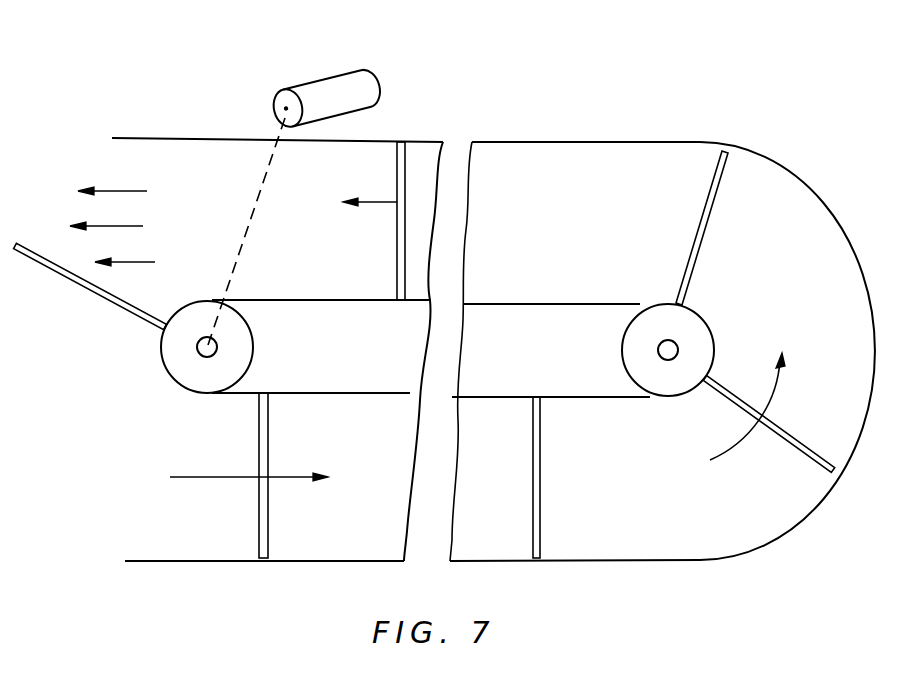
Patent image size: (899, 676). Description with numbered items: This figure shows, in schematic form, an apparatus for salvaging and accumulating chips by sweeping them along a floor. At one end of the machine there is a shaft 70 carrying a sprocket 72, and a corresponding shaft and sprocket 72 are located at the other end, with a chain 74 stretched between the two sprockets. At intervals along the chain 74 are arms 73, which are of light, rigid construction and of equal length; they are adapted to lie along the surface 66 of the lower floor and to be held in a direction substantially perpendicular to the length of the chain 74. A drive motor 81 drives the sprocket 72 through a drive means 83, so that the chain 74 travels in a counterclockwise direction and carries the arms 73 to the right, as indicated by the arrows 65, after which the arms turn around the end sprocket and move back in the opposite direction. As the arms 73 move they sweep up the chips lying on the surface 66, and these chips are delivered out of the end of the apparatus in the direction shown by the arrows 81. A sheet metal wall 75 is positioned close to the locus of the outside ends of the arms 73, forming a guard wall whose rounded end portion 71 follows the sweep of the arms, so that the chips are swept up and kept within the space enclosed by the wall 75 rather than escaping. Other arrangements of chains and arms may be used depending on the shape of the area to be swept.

The arrows 65 is at (379, 202).
The surface of the lower floor 66 is at (566, 227).
The shaft 70 is at (218, 350).
The semicircular end wall 71 is at (845, 248).
The sprocket 72 is at (250, 333).
The arms 73 is at (110, 303).
The chain 74 is at (538, 303).
The sheet metal wall 75 is at (657, 142).
The drive motor 81 is at (330, 77).
The means 83 is at (240, 266).